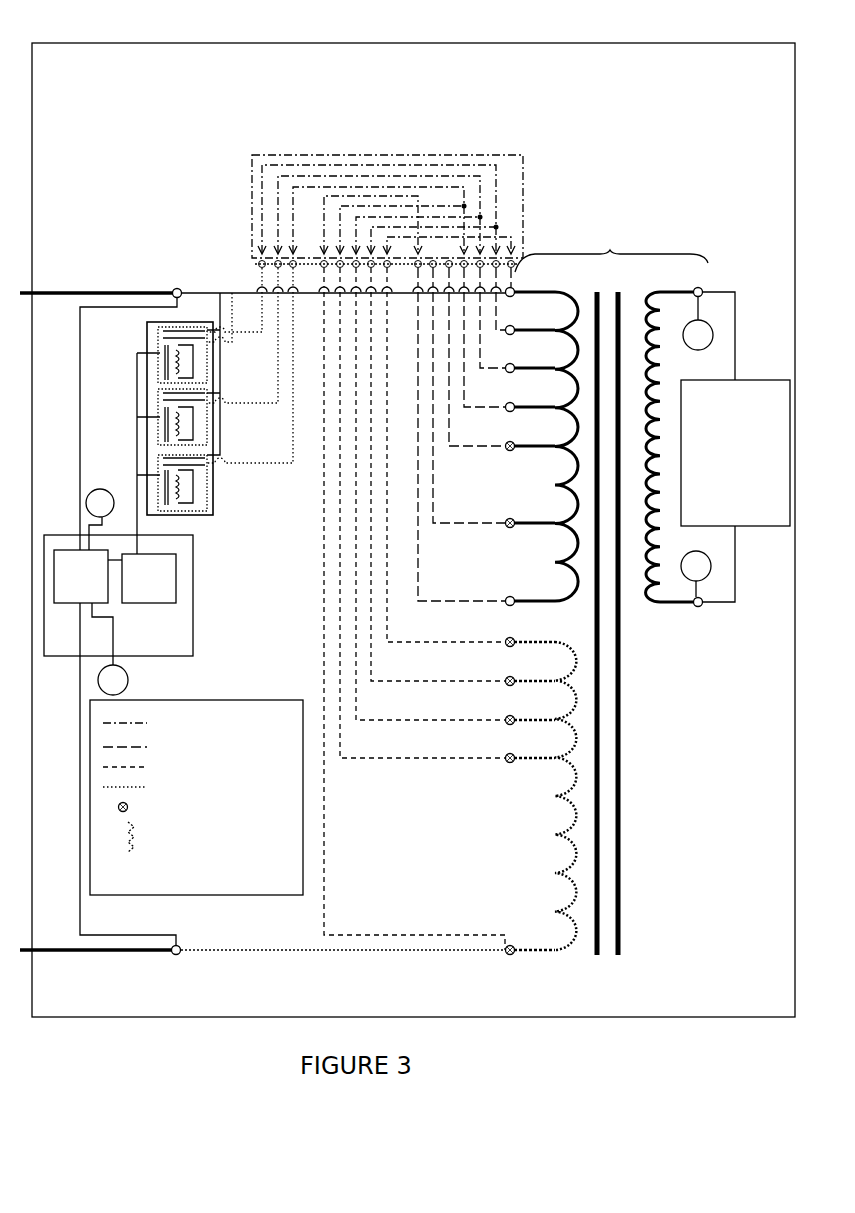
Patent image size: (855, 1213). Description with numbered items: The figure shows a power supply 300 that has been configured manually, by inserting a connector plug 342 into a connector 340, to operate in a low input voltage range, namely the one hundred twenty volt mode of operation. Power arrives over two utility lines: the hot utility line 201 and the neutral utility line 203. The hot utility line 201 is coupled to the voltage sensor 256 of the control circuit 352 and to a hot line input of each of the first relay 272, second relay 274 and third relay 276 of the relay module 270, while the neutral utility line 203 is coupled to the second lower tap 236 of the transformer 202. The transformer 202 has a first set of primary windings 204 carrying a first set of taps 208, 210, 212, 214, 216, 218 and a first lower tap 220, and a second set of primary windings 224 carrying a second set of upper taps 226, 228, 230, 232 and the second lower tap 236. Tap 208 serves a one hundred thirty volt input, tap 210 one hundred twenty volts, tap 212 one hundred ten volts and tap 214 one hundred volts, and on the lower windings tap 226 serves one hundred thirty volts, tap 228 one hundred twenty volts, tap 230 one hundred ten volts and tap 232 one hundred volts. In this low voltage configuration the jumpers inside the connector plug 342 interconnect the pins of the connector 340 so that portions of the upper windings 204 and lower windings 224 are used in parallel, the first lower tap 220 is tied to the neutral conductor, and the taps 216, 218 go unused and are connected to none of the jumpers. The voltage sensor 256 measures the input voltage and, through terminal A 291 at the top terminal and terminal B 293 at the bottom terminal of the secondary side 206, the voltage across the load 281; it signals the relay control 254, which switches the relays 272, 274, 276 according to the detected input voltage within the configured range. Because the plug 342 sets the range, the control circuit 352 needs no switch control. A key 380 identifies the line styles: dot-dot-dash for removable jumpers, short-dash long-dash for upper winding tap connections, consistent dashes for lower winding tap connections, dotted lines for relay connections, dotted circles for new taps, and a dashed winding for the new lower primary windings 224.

The power supply 300 is at (383, 44).
The hot utility line 201 is at (60, 296).
The neutral utility line 203 is at (208, 952).
The transformer 202 is at (611, 593).
The first set of primary transformer windings 204 is at (556, 270).
The secondary side 206 is at (670, 265).
The tap 208 is at (512, 297).
The tap 210 is at (512, 335).
The tap 212 is at (512, 373).
The tap 214 is at (512, 412).
The tap 216 is at (512, 451).
The tap 218 is at (512, 528).
The first lower tap 220 is at (513, 597).
The second set of primary transformer windings 224 is at (530, 632).
The tap 226 is at (511, 647).
The tap 228 is at (511, 686).
The tap 230 is at (511, 725).
The tap 232 is at (511, 763).
The second lower tap 236 is at (514, 946).
The relay control 254 is at (148, 605).
The voltage sensor 256 is at (73, 604).
The relay module 270 is at (147, 332).
The first relay 272 is at (158, 350).
The second relay 274 is at (158, 410).
The third relay 276 is at (158, 463).
The load 281 is at (790, 378).
The terminal A 291 is at (100, 489).
The terminal B 293 is at (128, 683).
The connector 340 is at (240, 259).
The connector plug 342 is at (385, 152).
The control circuit 352 is at (65, 535).
The key 380 is at (262, 896).